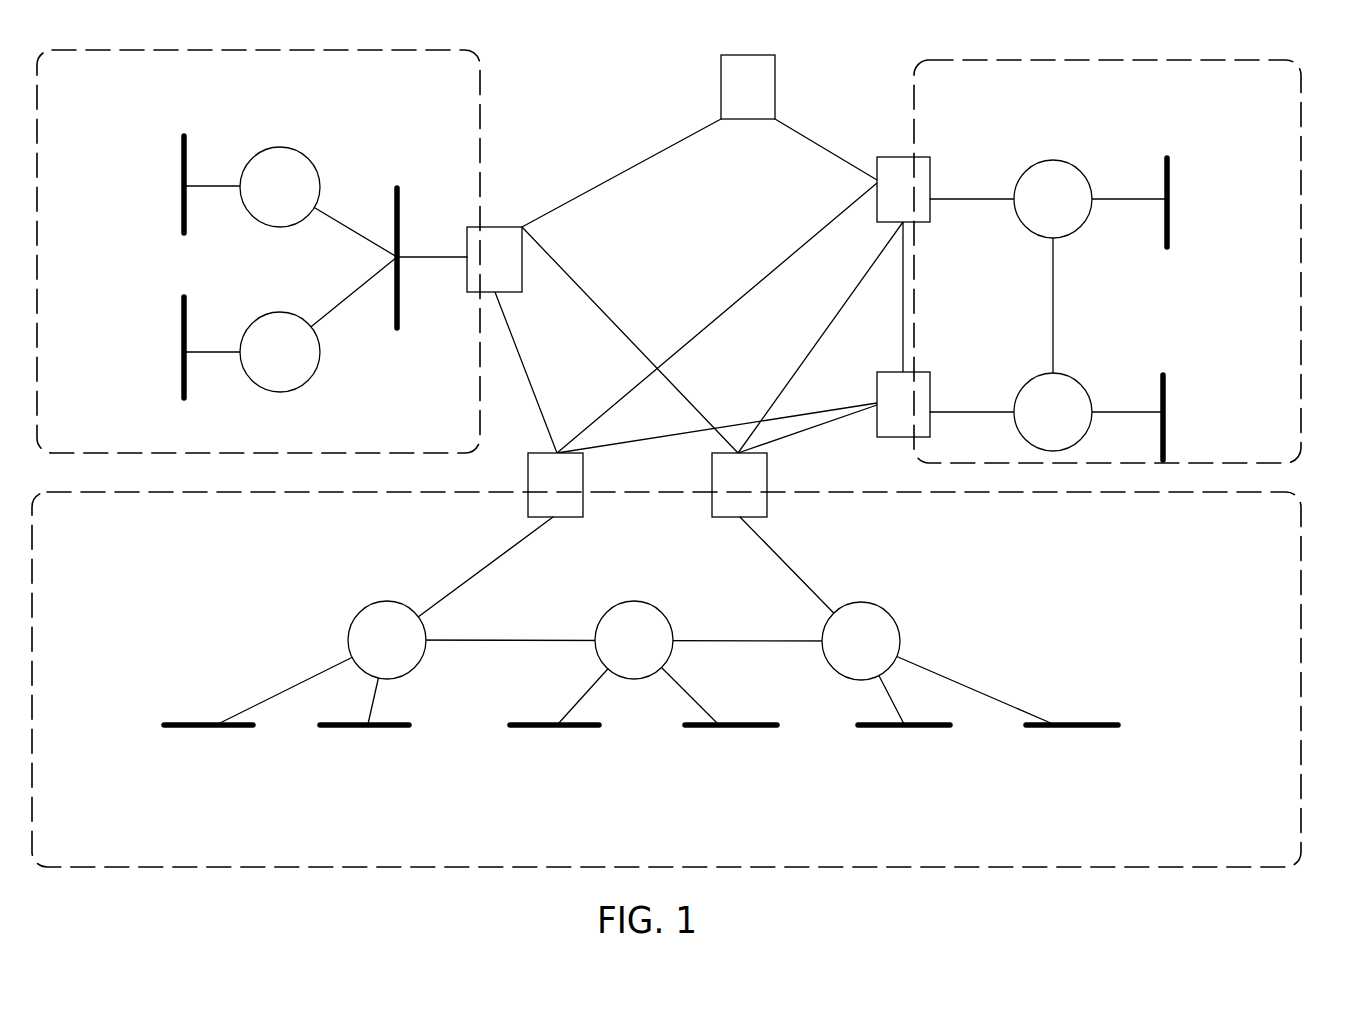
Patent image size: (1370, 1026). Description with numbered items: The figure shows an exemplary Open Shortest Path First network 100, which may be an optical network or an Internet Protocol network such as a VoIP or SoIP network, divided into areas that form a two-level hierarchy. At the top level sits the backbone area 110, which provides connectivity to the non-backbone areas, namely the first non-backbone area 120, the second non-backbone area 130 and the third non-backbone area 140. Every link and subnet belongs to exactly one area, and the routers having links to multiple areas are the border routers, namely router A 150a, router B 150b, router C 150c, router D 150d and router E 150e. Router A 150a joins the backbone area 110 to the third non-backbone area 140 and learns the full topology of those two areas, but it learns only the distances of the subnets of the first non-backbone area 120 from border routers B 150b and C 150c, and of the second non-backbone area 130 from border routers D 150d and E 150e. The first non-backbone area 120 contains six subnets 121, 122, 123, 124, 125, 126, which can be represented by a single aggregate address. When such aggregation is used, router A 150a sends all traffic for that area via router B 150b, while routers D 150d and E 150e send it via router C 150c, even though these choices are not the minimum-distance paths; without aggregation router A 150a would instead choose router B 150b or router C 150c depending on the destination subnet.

The Open Shortest Path First (OSPF) network 100 is at (1369, 46).
The Area 0 110 is at (692, 213).
The area 1 120 is at (714, 837).
The subnet 121 is at (205, 766).
The subnet 122 is at (366, 766).
The subnet 123 is at (549, 766).
The subnet 124 is at (735, 766).
The subnet 125 is at (911, 766).
The subnet 126 is at (1082, 766).
The area 2 130 is at (1225, 288).
The area 3 140 is at (85, 243).
The border router A 150a is at (505, 227).
The border router B 150b is at (528, 472).
The border router C 150c is at (767, 473).
The border router D 150d is at (930, 370).
The border router E 150e is at (930, 160).